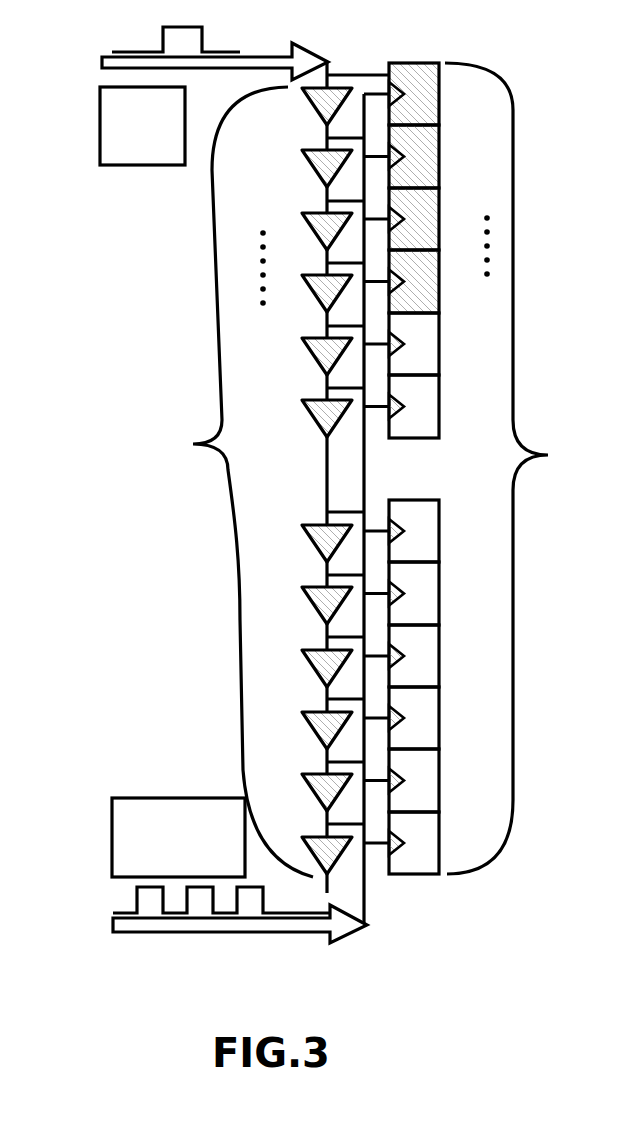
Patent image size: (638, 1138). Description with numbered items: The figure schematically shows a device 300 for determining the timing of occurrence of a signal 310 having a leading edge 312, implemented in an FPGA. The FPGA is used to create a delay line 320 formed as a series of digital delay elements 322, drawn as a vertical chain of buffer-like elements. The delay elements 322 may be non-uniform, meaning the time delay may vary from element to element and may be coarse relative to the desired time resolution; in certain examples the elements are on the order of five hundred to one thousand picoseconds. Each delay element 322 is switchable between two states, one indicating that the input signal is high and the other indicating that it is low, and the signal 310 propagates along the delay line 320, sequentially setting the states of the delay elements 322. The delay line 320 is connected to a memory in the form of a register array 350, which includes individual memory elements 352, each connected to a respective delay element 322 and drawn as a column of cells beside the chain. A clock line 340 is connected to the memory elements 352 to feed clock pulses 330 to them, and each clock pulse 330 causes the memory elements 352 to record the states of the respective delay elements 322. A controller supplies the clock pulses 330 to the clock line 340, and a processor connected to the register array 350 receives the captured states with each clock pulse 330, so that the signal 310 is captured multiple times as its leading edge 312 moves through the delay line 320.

The device 300 is at (137, 347).
The signal 310 is at (162, 38).
The leading edge 312 is at (203, 42).
The delay line 320 is at (269, 492).
The delay elements 322 is at (305, 215).
The clock pulses 330 is at (130, 894).
The clock line 340 is at (365, 903).
The register array 350 is at (494, 468).
The memory elements 352 is at (439, 222).